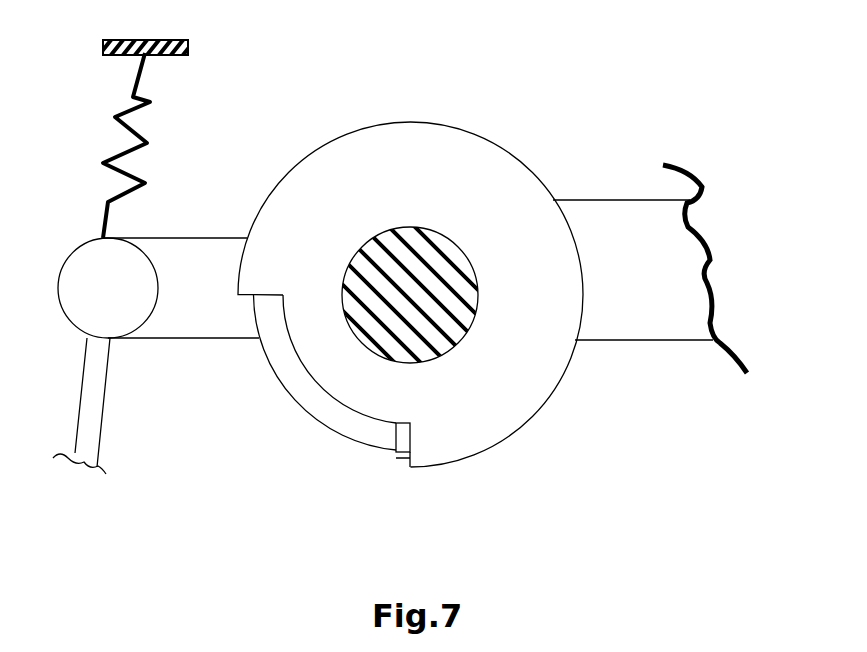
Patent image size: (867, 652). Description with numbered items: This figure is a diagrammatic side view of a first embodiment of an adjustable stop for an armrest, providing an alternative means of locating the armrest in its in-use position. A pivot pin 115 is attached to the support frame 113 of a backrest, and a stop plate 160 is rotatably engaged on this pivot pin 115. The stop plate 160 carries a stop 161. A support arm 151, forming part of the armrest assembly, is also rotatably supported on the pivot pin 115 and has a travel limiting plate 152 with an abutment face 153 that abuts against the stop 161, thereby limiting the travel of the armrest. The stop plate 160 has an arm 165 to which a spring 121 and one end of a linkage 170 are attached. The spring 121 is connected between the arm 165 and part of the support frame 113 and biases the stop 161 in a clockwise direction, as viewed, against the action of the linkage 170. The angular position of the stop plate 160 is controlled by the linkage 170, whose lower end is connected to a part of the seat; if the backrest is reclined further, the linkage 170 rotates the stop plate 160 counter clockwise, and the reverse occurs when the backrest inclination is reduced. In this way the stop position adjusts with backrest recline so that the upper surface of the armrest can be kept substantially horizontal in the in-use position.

The support frame 113 is at (188, 52).
The spring 121 is at (147, 138).
The arm 165 is at (237, 340).
The linkage 170 is at (100, 418).
The travel limiting plate 152 is at (538, 408).
The stop plate 160 is at (298, 407).
The stop 161 is at (396, 441).
The abutment face 153 is at (396, 458).
The pivot pin 115 is at (425, 362).
The support arm 151 is at (655, 340).